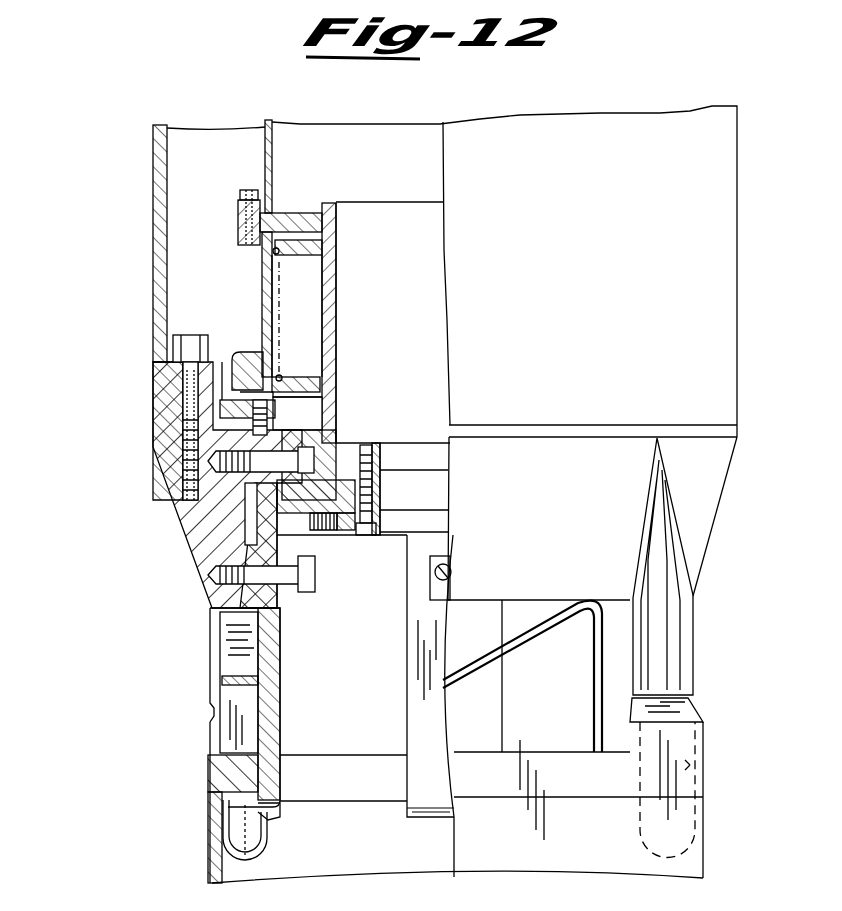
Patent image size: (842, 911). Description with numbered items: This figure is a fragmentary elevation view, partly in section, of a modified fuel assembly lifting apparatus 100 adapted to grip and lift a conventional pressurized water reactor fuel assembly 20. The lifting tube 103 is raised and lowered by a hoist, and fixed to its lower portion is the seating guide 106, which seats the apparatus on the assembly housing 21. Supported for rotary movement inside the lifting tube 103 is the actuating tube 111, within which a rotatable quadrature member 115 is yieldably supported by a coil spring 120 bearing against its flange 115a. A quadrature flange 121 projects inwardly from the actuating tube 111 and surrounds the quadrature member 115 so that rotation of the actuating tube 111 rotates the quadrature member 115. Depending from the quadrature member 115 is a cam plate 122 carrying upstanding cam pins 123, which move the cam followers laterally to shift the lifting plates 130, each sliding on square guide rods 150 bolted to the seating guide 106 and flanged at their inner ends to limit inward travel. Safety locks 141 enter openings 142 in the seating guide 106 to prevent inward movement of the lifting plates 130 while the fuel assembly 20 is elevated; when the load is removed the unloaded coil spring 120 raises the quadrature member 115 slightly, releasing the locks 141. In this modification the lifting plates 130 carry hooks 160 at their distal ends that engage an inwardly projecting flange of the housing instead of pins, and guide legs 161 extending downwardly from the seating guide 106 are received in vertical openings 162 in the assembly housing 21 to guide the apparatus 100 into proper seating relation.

The fuel assembly lifting apparatus 100 is at (124, 172).
The lifting cylindrical tube 103 is at (153, 243).
The seating guide 106 is at (200, 550).
The actuating tube 111 is at (265, 156).
The quadrature member 115 is at (336, 342).
The flange of the quadrature member 115a is at (318, 245).
The coil spring 120 is at (280, 290).
The quadrature flange 121 is at (302, 212).
The cam plate 122 is at (380, 513).
The cam pins 123 is at (300, 533).
The lifting plates 130 is at (407, 718).
The safety locks 141 is at (220, 408).
The openings 142 is at (221, 396).
The guide rods 150 is at (322, 430).
The hooks 160 is at (282, 808).
The guide legs 161 is at (703, 775).
The vertical openings 162 is at (703, 742).
The fuel assembly 20 is at (706, 843).
The assembly housing 21 is at (210, 865).